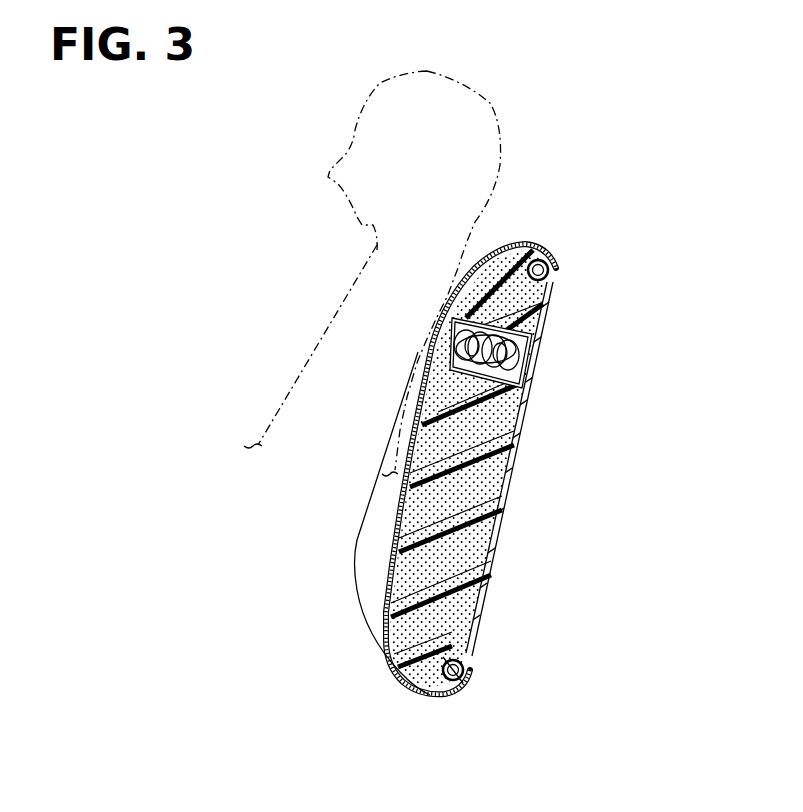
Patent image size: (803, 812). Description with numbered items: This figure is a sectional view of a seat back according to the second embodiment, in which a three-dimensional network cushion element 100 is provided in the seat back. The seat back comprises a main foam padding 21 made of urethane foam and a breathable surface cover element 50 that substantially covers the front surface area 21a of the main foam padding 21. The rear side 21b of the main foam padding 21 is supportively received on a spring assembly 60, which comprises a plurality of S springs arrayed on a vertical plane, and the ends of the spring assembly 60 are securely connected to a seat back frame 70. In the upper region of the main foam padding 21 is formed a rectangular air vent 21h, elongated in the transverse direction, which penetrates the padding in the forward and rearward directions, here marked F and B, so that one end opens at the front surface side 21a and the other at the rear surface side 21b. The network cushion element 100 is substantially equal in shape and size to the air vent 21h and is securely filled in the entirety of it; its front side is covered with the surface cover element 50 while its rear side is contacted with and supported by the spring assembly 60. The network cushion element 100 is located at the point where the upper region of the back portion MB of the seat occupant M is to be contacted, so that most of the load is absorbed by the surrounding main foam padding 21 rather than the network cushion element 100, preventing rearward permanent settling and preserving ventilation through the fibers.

The main foam padding 21 is at (473, 543).
The front surface area of the main foam padding 21a is at (392, 563).
The rear side of the main foam padding 21b is at (485, 573).
The air vent 21h is at (522, 420).
The breathable surface cover element 50 is at (395, 533).
The spring assembly 60 is at (511, 487).
The seat back frame 70 is at (545, 255).
The network cushion element 100 is at (552, 360).
The occupant head M is at (497, 118).
The seat occupant's back portion MB is at (427, 333).
The front direction F is at (116, 323).
The back direction B is at (685, 428).